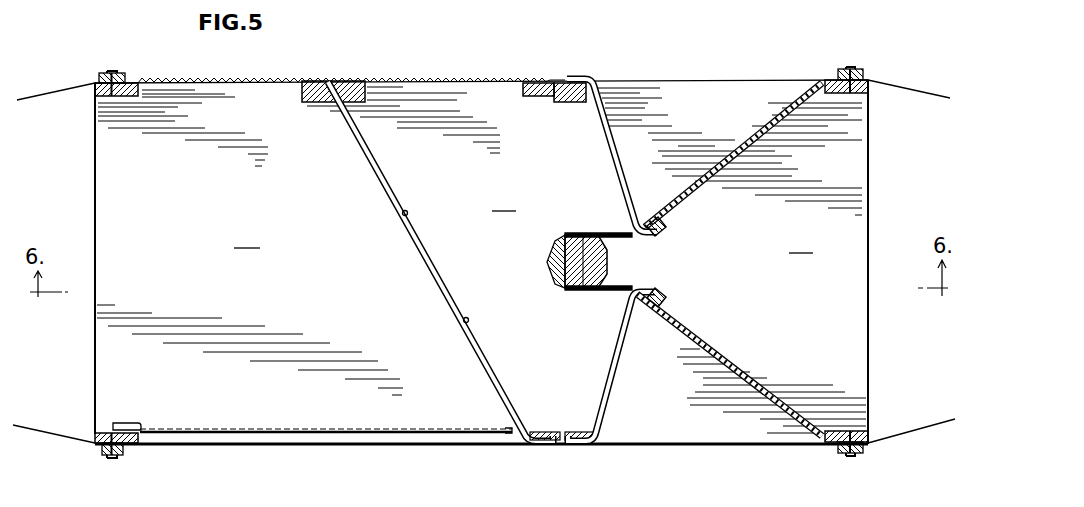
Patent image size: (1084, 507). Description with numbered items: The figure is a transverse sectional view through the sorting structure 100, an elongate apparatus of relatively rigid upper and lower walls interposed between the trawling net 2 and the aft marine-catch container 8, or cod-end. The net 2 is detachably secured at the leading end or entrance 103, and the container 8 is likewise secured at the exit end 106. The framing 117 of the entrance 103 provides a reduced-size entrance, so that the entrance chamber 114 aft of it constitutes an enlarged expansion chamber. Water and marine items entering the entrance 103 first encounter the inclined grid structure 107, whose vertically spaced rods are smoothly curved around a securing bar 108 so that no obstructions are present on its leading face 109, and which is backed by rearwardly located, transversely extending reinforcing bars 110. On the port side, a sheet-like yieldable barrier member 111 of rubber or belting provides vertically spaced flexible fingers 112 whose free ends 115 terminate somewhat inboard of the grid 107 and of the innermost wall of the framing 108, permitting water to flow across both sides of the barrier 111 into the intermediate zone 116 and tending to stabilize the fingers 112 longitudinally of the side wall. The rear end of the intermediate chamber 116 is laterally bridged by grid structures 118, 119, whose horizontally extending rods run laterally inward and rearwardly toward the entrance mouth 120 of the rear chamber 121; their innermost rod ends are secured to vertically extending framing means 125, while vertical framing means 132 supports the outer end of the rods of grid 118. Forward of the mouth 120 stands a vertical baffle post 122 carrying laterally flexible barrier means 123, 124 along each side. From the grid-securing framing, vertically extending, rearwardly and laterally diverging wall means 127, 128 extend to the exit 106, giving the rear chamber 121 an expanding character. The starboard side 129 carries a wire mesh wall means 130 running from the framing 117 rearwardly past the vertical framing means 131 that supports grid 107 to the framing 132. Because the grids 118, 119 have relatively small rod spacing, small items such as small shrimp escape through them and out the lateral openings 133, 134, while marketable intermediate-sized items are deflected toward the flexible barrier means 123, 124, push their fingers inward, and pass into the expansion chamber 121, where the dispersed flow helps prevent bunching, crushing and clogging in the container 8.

The trawling net 2 is at (65, 90).
The marine-catch container 8 is at (892, 84).
The structure 100 is at (551, 58).
The entrance 103 is at (92, 226).
The exit end 106 is at (840, 69).
The inclined grid like structure 107 is at (403, 227).
The securing bar 108 is at (396, 82).
The leading face 109 is at (428, 277).
The reinforcing bars 110 is at (408, 215).
The yieldable barrier member 111 is at (256, 446).
The flexible fingers 112 is at (333, 428).
The entrance chamber 114 is at (247, 238).
The free ends 115 is at (510, 427).
The intermediate zone 116 is at (504, 201).
The framing of the entrance 117 is at (97, 97).
The grid structure 118 is at (619, 168).
The grid structure 119 is at (616, 367).
The entrance mouth 120 is at (650, 252).
The rear chamber 121 is at (801, 243).
The baffle post 122 is at (553, 262).
The laterally flexible barrier means 123 is at (619, 231).
The laterally flexible barrier means 124 is at (608, 293).
The vertically extending framing means 125 is at (668, 223).
The wall means 127 is at (747, 387).
The wall means 128 is at (764, 128).
The starboard side 129 is at (284, 82).
The wire mesh wall means 130 is at (150, 83).
The vertical framing means 131 is at (357, 101).
The vertical framing means 132 is at (566, 104).
The lateral opening 133 is at (621, 95).
The lateral opening 134 is at (648, 406).